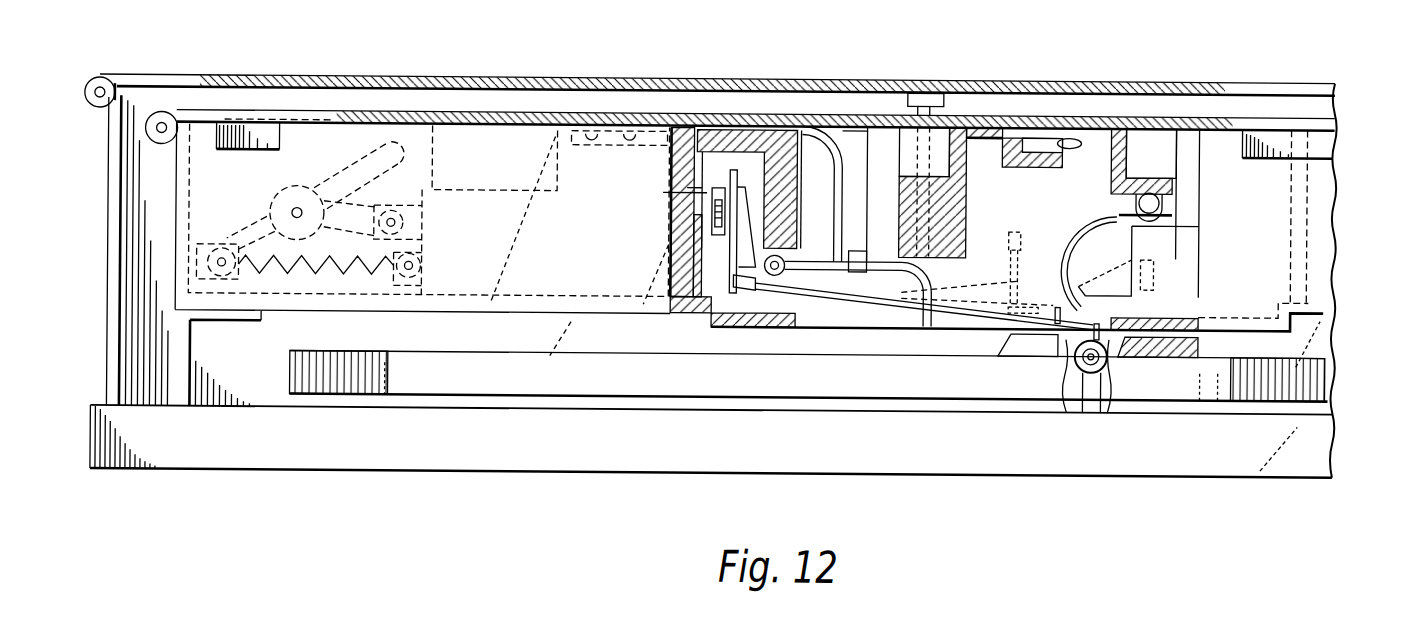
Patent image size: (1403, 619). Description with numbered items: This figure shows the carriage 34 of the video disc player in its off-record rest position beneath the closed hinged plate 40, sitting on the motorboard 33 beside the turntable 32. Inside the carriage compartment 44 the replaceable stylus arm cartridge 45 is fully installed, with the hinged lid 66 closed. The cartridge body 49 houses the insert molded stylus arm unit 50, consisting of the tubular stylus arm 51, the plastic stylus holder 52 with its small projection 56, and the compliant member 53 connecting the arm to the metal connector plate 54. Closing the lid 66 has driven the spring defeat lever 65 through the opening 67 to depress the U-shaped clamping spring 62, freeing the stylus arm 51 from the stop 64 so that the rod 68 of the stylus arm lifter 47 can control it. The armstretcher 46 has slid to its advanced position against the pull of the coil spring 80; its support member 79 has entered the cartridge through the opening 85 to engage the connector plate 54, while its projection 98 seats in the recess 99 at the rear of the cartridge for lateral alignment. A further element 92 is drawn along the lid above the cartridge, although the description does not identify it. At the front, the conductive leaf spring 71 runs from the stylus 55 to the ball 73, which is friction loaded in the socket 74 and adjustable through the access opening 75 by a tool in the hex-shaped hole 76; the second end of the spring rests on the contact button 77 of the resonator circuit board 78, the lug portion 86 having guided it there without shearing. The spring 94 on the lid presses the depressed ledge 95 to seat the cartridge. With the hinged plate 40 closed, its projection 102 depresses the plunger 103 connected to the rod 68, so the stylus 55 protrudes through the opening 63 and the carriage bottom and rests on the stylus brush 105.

The turntable 32 is at (292, 358).
The motorboard 33 is at (93, 431).
The carriage 34 is at (1345, 161).
The hinged plate 40 is at (290, 74).
The carriage compartment 44 is at (1208, 98).
The stylus arm cartridge 45 is at (1098, 133).
The armstretcher 46 is at (538, 274).
The stylus arm lifter 47 is at (1010, 238).
The cartridge body 49 is at (987, 134).
The stylus arm unit 50 is at (1282, 40).
The stylus arm 51 is at (960, 322).
The stylus holder 52 is at (1062, 332).
The compliant member 53 is at (756, 320).
The connector plate 54 is at (736, 176).
The stylus 55 is at (1112, 340).
The projection 56 is at (1063, 282).
The clamping spring 62 is at (868, 247).
The opening 63 is at (1057, 297).
The stop 64 is at (900, 220).
The spring defeat lever 65 is at (834, 199).
The hinged lid 66 is at (786, 122).
The opening 67 is at (854, 135).
The rod 68 is at (882, 306).
The leaf spring 71 is at (1089, 220).
The ball 73 is at (1175, 200).
The socket 74 is at (1173, 186).
The access opening 75 is at (1150, 180).
The hex-shaped hole 76 is at (1185, 130).
The contact button 77 is at (1124, 215).
The resonator circuit board 78 is at (1200, 236).
The support member 79 is at (718, 232).
The coil spring 80 is at (330, 268).
The opening 85 is at (673, 193).
The lug portion 86 is at (1155, 262).
The contact strip 92 is at (604, 132).
The spring 94 is at (1054, 132).
The depressed ledge 95 is at (1023, 130).
The projection 98 is at (718, 122).
The recess 99 is at (747, 124).
The projection 102 is at (962, 82).
The plunger 103 is at (914, 88).
The stylus brush 105 is at (1088, 407).